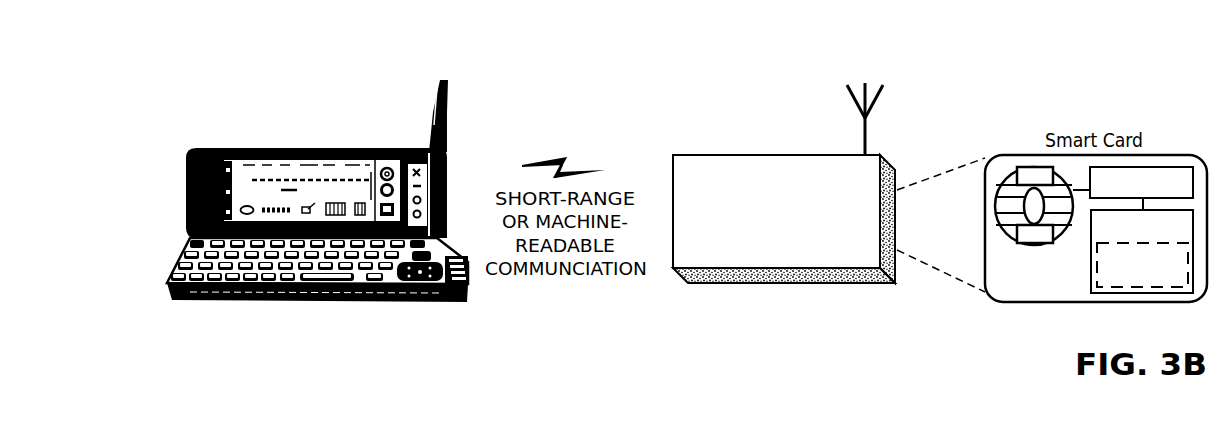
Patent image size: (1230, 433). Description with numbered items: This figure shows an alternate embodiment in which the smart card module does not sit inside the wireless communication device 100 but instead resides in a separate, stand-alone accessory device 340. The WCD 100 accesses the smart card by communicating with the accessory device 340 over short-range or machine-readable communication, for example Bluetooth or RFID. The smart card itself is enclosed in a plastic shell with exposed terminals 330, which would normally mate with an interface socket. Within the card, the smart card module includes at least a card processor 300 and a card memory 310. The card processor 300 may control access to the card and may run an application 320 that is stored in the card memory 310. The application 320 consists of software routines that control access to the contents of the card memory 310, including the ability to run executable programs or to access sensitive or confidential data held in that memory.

The wireless communication device 100 is at (150, 63).
The accessory device 340 is at (784, 183).
The exposed terminals 330 is at (1016, 168).
The card processor 300 is at (1141, 182).
The card memory 310 is at (1142, 251).
The application 320 is at (1142, 265).